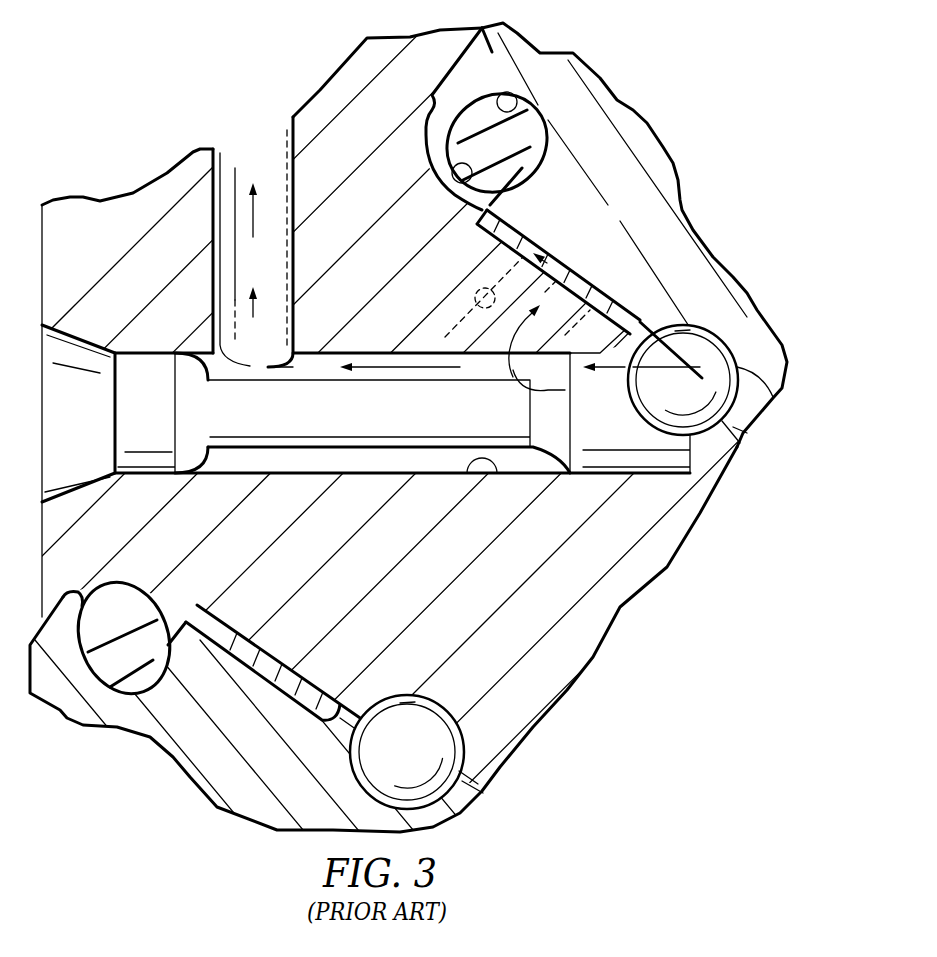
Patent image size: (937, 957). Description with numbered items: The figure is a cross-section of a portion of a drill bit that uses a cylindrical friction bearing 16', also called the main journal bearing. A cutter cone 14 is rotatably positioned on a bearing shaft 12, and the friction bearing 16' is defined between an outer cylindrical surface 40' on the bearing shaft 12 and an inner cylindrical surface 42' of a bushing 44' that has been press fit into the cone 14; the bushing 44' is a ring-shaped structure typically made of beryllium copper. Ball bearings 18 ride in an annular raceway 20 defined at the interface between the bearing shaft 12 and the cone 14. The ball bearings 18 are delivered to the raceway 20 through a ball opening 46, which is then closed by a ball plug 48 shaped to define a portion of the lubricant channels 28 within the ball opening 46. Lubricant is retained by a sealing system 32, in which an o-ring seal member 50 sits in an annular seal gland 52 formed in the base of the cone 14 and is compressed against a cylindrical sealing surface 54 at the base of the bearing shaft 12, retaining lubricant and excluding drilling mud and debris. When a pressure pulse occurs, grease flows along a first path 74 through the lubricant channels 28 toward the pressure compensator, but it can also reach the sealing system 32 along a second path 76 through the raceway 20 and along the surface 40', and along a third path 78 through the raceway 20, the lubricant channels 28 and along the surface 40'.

The bearing shaft 12 is at (585, 625).
The cutter cone 14 is at (733, 235).
The cylindrical friction bearing 16' is at (599, 188).
The ball bearings 18 is at (774, 399).
The annular raceway 20 is at (757, 312).
The lubricant channels 28 is at (253, 157).
The sealing system 32 is at (553, 85).
The outer cylindrical surface 40' is at (558, 258).
The inner cylindrical surface 42' is at (525, 272).
The bushing 44' is at (553, 261).
The ball opening 46 is at (466, 487).
The ball plug 48 is at (342, 433).
The o-ring seal member 50 is at (528, 133).
The seal gland 52 is at (504, 93).
The cylindrical sealing surface 54 is at (453, 174).
The first path 74 is at (283, 367).
The second path 76 is at (668, 332).
The third path 78 is at (565, 390).